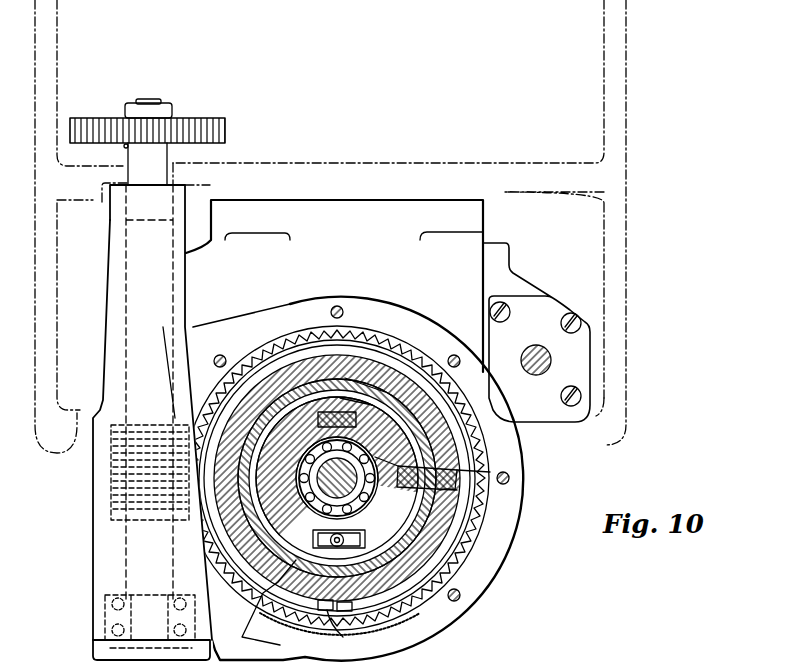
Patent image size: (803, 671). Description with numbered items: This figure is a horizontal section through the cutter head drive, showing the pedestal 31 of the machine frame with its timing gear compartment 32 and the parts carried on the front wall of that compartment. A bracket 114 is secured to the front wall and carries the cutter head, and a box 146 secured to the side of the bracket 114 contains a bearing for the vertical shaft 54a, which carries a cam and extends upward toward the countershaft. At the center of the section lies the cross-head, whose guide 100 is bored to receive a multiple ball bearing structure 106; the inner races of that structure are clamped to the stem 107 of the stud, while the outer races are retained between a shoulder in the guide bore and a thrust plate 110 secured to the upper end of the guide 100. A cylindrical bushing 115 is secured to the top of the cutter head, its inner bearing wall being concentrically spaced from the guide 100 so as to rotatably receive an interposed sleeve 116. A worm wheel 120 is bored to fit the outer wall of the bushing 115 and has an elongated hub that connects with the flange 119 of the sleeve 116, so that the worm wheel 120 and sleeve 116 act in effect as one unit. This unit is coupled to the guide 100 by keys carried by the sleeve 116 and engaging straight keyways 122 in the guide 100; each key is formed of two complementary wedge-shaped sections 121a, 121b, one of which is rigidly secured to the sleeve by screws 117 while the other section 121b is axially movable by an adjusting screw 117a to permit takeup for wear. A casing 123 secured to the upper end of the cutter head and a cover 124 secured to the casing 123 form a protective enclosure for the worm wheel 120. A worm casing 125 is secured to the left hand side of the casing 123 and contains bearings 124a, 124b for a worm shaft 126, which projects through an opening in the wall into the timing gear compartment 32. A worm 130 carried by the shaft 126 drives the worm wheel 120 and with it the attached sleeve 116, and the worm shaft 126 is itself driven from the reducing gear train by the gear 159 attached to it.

The pedestal 31 is at (626, 70).
The timing gear compartment 32 is at (231, 226).
The gear 159 is at (226, 127).
The worm shaft 126 is at (157, 172).
The bearing 124b is at (177, 200).
The worm 130 is at (115, 502).
The bearing 124a is at (107, 618).
The worm casing 125 is at (93, 583).
The bracket 114 is at (485, 216).
The box 146 is at (570, 298).
The vertical shaft 54a is at (551, 359).
The casing 123 is at (586, 423).
The cover 124 is at (418, 630).
The cylindrical bushing 115 is at (440, 442).
The guide 100 is at (462, 457).
The sleeve 116 is at (492, 517).
The thrust plate 110 is at (443, 562).
The worm wheel 120 is at (510, 478).
The wedge-shaped section 121a is at (333, 412).
The wedge-shaped section 121b is at (362, 404).
The keyway 122 is at (382, 390).
The stem 107 is at (372, 500).
The multiple ball bearing structure 106 is at (426, 492).
The adjusting screw 117a is at (350, 546).
The screws 117 is at (357, 635).
The flange 119 is at (457, 490).